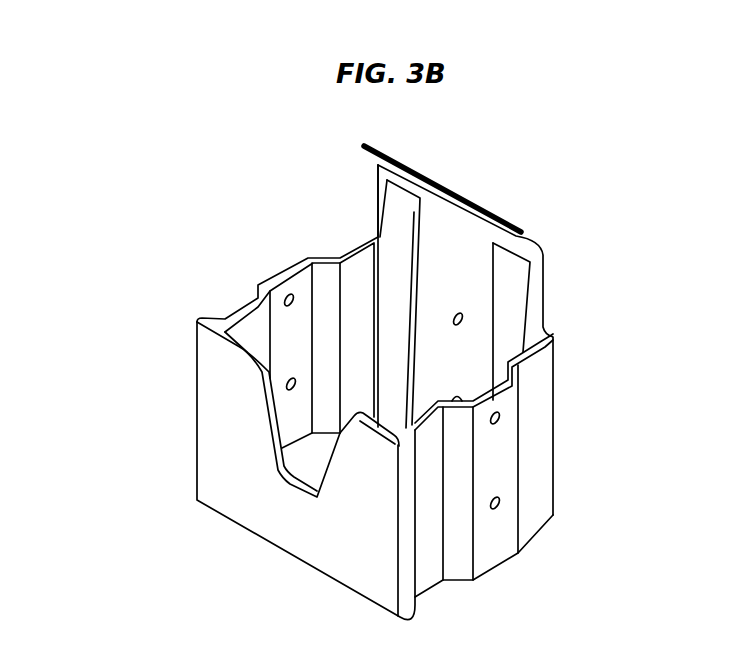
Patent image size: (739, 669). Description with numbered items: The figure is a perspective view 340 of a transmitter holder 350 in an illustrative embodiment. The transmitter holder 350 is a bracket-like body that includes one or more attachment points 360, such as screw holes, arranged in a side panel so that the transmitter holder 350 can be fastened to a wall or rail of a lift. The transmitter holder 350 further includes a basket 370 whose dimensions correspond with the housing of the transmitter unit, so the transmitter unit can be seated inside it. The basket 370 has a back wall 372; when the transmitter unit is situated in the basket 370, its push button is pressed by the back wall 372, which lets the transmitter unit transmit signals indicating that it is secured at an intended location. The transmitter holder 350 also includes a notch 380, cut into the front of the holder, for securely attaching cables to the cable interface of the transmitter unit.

The perspective view 340 is at (138, 373).
The transmitter holder 350 is at (523, 584).
The attachment points 360 is at (501, 418).
The basket 370 is at (298, 286).
The back wall 372 is at (455, 230).
The notch 380 is at (305, 466).